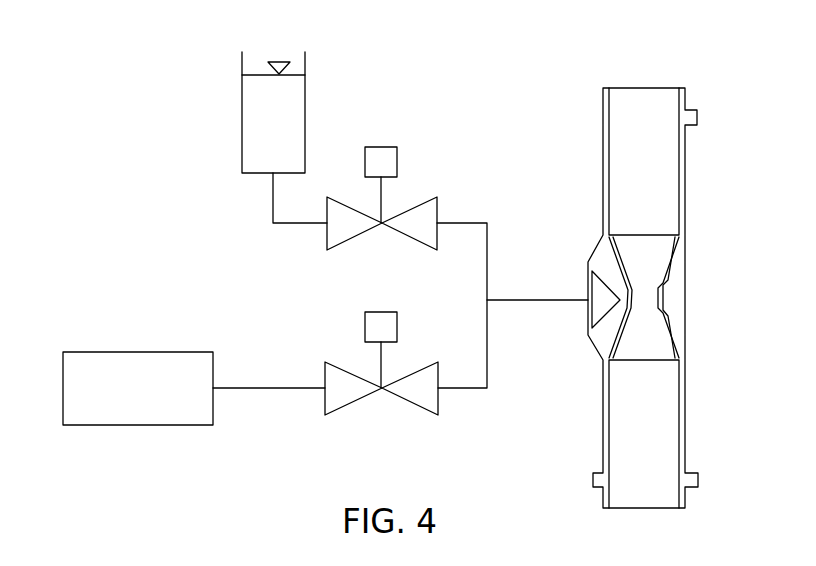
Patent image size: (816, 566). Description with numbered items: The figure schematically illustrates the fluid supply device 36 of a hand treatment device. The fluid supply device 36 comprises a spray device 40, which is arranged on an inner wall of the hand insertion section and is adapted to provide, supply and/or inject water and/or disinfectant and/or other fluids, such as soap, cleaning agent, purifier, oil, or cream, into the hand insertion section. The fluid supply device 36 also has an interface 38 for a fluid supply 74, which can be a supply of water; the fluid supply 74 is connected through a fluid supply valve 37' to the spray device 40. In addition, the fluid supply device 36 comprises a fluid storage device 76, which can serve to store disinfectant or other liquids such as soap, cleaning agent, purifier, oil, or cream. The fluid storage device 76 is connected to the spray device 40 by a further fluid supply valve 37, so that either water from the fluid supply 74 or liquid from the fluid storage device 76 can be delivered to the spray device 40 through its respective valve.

The fluid supply device 36 is at (140, 160).
The fluid storage device 76 is at (260, 175).
The fluid supply valve 37 is at (457, 222).
The fluid supply valve 37' is at (356, 333).
The fluid supply 74 is at (123, 427).
The interface 38 is at (290, 390).
The spray device 40 is at (580, 198).